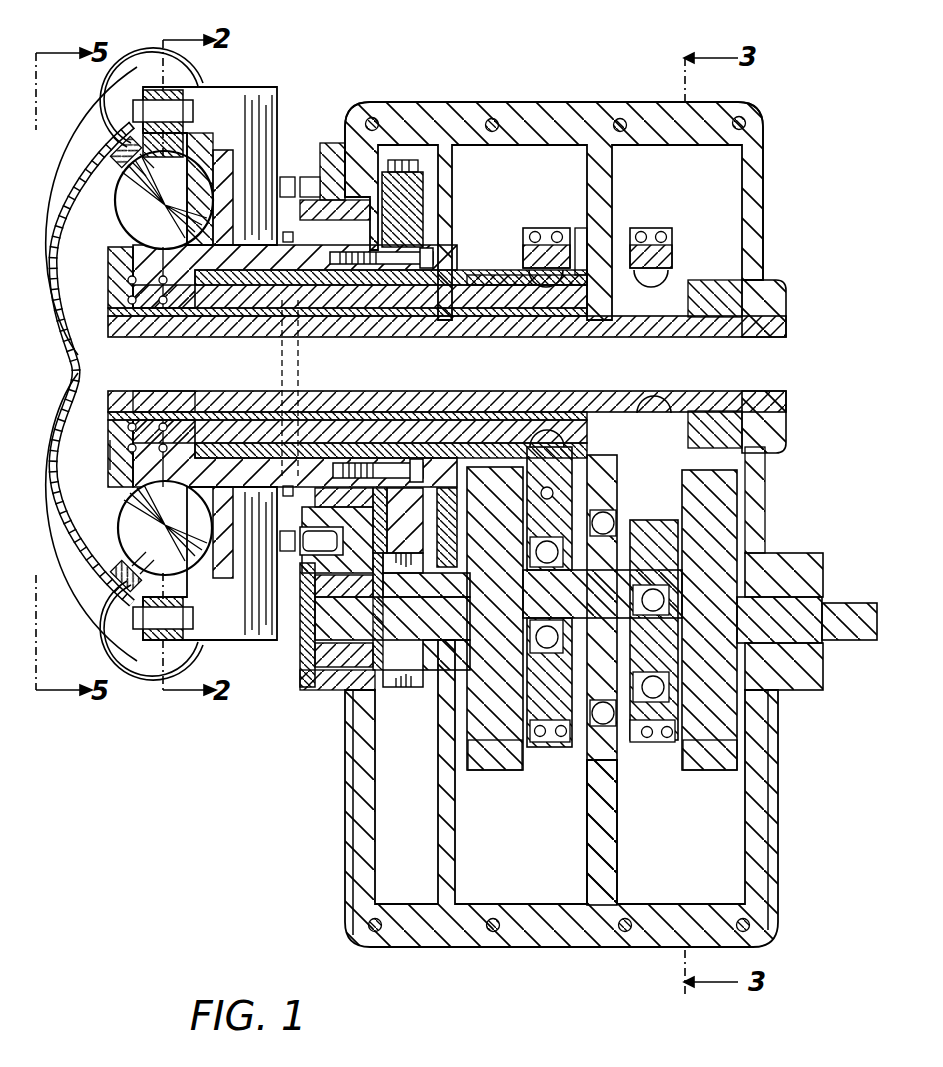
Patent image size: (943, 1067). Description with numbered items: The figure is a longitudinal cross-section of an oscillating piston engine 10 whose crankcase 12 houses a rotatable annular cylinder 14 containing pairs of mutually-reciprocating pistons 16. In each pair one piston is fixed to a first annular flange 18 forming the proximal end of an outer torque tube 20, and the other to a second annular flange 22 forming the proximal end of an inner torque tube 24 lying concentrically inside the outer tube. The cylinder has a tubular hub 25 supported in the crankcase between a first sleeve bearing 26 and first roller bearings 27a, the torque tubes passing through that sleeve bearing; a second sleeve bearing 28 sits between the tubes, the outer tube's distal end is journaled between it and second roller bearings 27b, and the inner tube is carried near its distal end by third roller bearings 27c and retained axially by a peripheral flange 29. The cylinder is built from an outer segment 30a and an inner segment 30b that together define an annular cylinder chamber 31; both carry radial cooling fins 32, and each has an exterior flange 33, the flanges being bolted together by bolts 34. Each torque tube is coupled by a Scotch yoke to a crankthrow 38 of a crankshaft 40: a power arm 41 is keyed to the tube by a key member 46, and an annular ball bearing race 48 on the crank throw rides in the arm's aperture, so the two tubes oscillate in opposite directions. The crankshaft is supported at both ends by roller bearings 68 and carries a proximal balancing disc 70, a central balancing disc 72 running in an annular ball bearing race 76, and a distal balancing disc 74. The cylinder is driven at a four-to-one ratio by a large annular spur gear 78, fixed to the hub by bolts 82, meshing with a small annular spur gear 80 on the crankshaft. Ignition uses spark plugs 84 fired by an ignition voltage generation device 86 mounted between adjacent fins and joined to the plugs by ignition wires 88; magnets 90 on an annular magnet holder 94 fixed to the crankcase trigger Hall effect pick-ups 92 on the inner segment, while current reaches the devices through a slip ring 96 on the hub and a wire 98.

The engine 10 is at (531, 84).
The crankcase 12 is at (765, 200).
The cylinder 14 is at (218, 84).
The pistons 16 is at (116, 208).
The first annular flange 18 is at (128, 265).
The outer torque tube 20 is at (207, 430).
The second annular flange 22 is at (118, 305).
The inner torque tube 24 is at (160, 395).
The tubular hub 25 is at (228, 310).
The first tubular sleeve bearing 26 is at (530, 285).
The first plurality of roller bearings 27a is at (318, 308).
The second plurality of roller bearings 27b is at (585, 268).
The third plurality of roller bearings 27c is at (735, 300).
The second tubular sleeve bearing 28 is at (352, 330).
The peripheral flange 29 is at (787, 318).
The outer cylinder segment 30a is at (70, 337).
The inner cylinder segment 30b is at (190, 128).
The annular cylinder chamber 31 is at (68, 464).
The radial cooling fins 32 is at (58, 152).
The exterior flange 33 is at (155, 88).
The bolts 34 is at (195, 108).
The crankthrow 38 is at (540, 575).
The crankshaft 40 is at (300, 640).
The power arm 41 is at (528, 248).
The key member 46 is at (546, 285).
The annular ball bearing race 48 is at (585, 651).
The roller bearings 68 is at (330, 660).
The proximal balancing disc 70 is at (495, 772).
The central balancing disc 72 is at (548, 660).
The distal balancing disc 74 is at (705, 772).
The annular ball bearing race 76 is at (590, 740).
The large annular spur gear 78 is at (405, 165).
The small annular spur gear 80 is at (405, 688).
The bolts 82 is at (432, 258).
The spark plugs 84 is at (112, 146).
The ignition voltage generation device 86 is at (285, 95).
The ignition wires 88 is at (157, 52).
The magnets 90 is at (320, 178).
The Hall effect pick-ups 92 is at (280, 190).
The annular magnet holder 94 is at (330, 158).
The slip ring 96 is at (283, 237).
The wire 98 is at (283, 491).